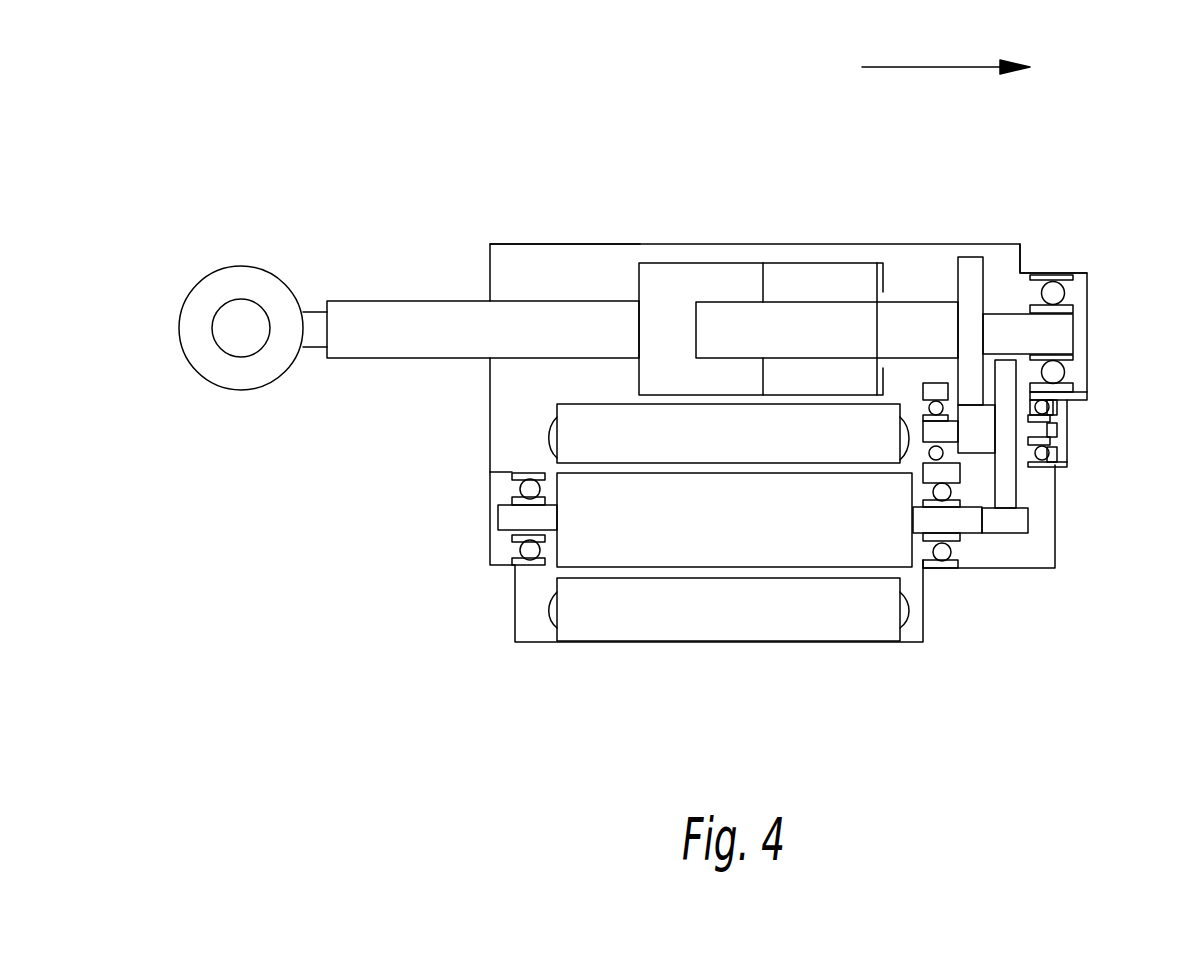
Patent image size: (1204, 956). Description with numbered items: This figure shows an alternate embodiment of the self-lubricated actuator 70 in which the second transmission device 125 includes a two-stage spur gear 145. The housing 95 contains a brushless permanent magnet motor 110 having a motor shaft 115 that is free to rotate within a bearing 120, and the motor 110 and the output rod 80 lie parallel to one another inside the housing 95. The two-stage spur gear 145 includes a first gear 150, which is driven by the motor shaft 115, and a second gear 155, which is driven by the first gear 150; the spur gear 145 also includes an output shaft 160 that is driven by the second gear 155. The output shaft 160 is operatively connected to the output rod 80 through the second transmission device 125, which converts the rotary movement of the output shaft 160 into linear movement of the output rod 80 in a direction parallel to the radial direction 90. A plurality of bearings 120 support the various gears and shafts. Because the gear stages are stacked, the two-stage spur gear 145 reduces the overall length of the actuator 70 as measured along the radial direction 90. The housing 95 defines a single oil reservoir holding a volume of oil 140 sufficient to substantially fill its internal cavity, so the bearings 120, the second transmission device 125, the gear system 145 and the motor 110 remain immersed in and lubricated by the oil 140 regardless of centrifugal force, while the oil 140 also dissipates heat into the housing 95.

The actuator 70 is at (782, 184).
The output rod 80 is at (373, 358).
The radial direction 90 is at (930, 67).
The housing 95 is at (603, 243).
The brushless permanent magnet motor 110 is at (682, 548).
The motor shaft 115 is at (998, 525).
The bearings 120 is at (1067, 278).
The second transmission device 125 is at (834, 276).
The oil 140 is at (540, 268).
The two-stage spur gear 145 is at (1010, 260).
The first gear 150 is at (1005, 482).
The second gear 155 is at (973, 280).
The output shaft 160 is at (725, 317).